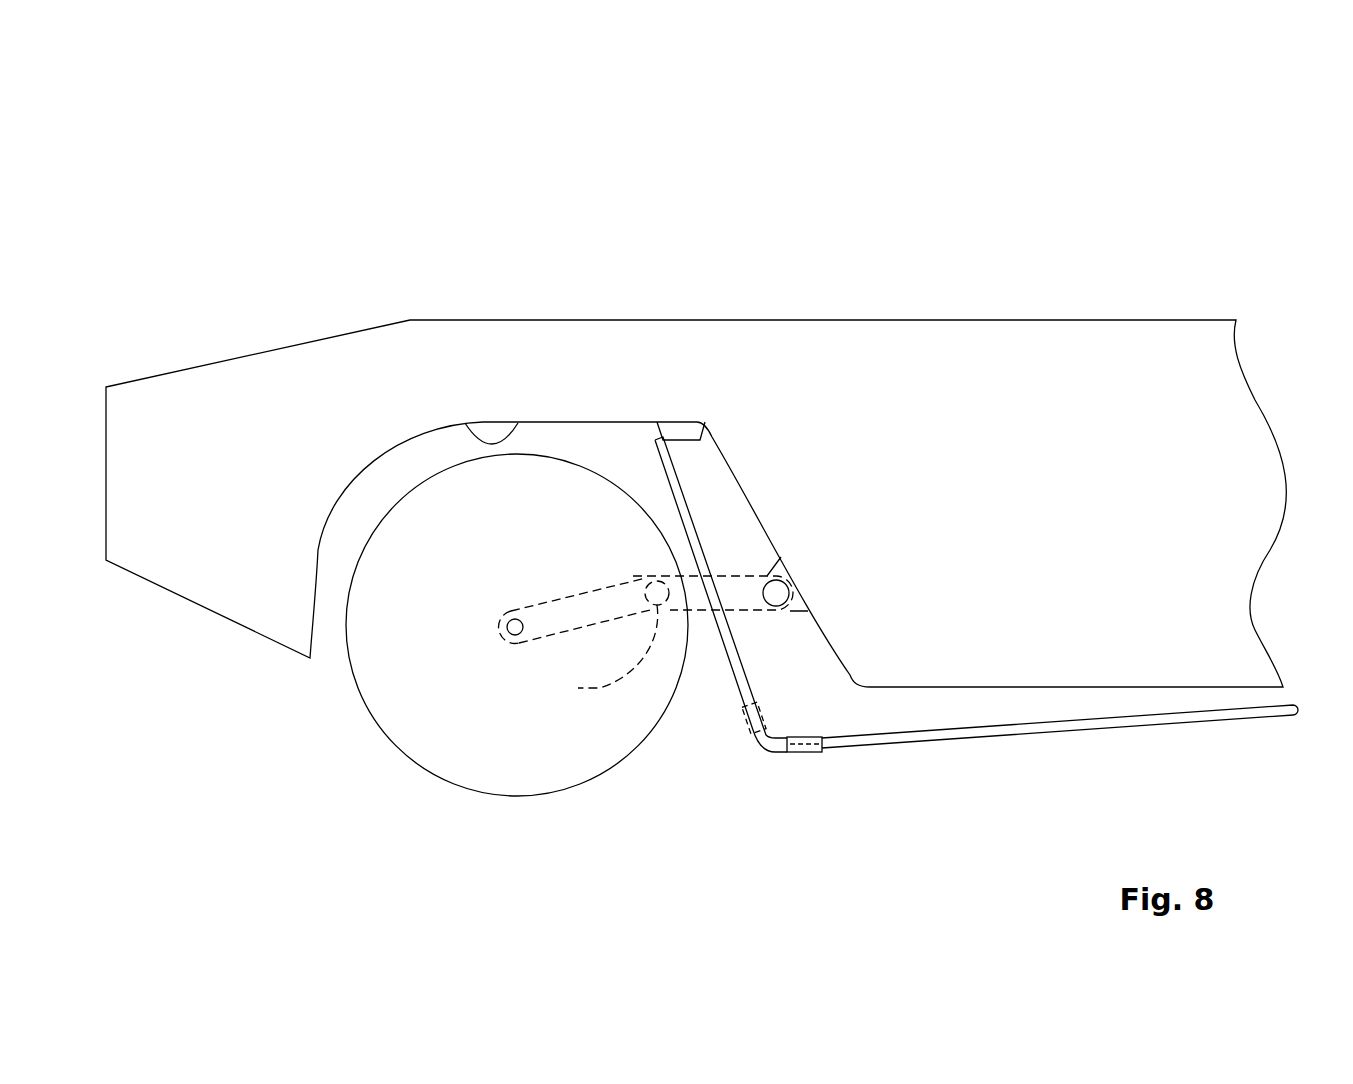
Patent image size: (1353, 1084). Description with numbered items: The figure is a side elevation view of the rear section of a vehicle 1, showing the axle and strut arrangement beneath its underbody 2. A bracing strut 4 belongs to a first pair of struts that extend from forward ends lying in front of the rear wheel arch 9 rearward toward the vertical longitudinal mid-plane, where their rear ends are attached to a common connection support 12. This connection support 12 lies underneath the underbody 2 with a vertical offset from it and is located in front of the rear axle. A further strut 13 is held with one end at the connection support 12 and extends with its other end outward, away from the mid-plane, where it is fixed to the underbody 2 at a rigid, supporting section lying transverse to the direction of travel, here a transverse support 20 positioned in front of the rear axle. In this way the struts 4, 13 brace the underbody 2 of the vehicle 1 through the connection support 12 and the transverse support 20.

The vehicle 1 is at (220, 159).
The underbody 2 is at (1050, 687).
The bracing strut 4 is at (958, 733).
The rear wheel arch 9 is at (507, 436).
The connection support 12 is at (785, 753).
The further strut 13 is at (728, 657).
The transverse support 20 is at (680, 430).